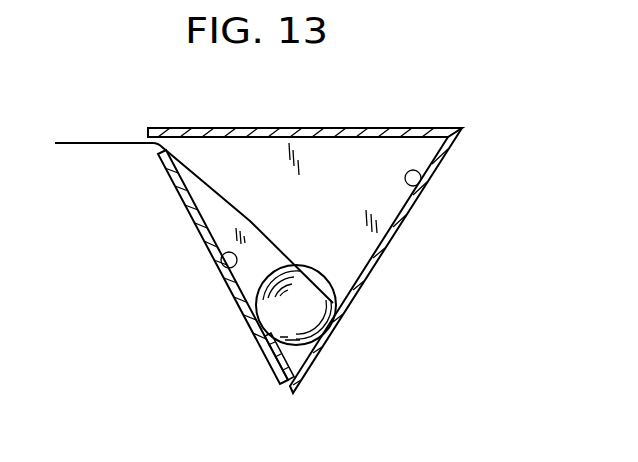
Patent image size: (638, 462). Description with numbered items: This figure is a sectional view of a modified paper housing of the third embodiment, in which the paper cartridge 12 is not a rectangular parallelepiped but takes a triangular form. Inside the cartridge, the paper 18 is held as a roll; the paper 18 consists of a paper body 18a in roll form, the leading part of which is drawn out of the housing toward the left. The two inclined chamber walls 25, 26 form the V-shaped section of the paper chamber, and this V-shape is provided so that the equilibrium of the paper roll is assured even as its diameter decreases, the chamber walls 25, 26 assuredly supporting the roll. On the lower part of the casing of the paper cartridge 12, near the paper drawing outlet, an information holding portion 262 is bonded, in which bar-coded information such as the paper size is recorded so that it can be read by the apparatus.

The paper cartridge 12 is at (372, 282).
The paper 18 is at (272, 315).
The paper body 18a is at (90, 148).
The chamber wall 25 is at (222, 268).
The chamber wall 26 is at (418, 186).
The information holding portion 262 is at (268, 364).